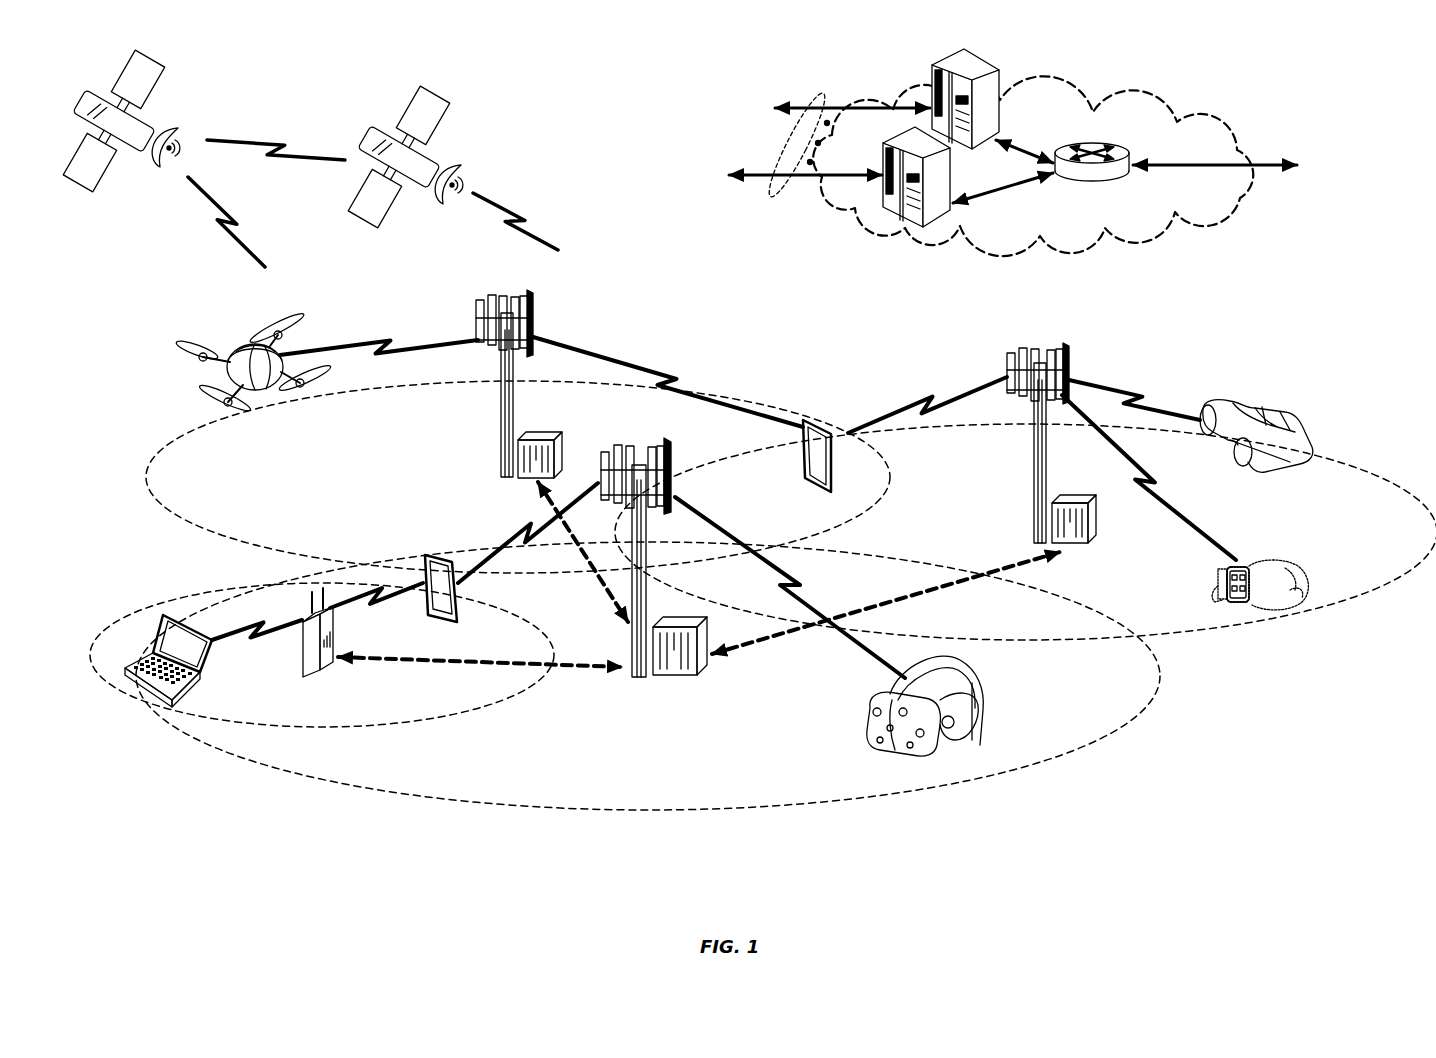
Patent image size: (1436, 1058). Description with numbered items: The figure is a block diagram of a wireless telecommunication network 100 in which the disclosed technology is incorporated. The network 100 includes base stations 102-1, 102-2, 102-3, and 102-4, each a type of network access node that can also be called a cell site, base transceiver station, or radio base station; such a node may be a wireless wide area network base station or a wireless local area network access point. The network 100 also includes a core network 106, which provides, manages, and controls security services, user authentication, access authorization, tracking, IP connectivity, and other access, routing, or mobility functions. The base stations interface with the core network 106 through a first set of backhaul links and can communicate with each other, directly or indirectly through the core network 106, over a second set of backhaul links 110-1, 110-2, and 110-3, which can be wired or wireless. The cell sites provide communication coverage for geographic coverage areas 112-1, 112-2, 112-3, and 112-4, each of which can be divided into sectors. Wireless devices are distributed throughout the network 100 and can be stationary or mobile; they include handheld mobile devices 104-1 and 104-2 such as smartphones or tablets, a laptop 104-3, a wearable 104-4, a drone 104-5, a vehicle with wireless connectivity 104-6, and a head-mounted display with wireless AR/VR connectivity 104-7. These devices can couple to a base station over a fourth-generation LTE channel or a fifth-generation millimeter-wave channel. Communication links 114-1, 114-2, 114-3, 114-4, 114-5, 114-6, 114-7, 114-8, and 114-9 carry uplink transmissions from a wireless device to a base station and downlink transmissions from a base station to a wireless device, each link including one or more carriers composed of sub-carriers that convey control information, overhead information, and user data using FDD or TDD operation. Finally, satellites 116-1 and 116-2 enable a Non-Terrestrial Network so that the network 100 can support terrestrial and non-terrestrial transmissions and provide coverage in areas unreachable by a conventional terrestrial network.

The wireless telecommunication network 100 is at (1370, 120).
The base station 102-1 is at (636, 677).
The base station 102-2 is at (501, 428).
The base station 102-3 is at (1034, 460).
The base station 102-4 is at (303, 665).
The handheld mobile device 104-1 is at (460, 602).
The handheld mobile device 104-2 is at (803, 457).
The laptop 104-3 is at (142, 704).
The wearable 104-4 is at (1250, 567).
The drone 104-5 is at (263, 390).
The vehicle with wireless connectivity 104-6 is at (1277, 410).
The head-mounted display with wireless AR/VR connectivity 104-7 is at (984, 690).
The core network 106 is at (1122, 233).
The backhaul link 110-1 is at (374, 661).
The backhaul link 110-2 is at (953, 588).
The backhaul link 110-3 is at (602, 584).
The geographic coverage area 112-1 is at (580, 812).
The geographic coverage area 112-2 is at (443, 720).
The geographic coverage area 112-3 is at (206, 530).
The geographic coverage area 112-4 is at (1346, 454).
The communication link 114-1 is at (808, 588).
The communication link 114-2 is at (522, 530).
The communication link 114-3 is at (228, 634).
The communication link 114-4 is at (374, 604).
The communication link 114-5 is at (380, 344).
The communication link 114-6 is at (670, 379).
The communication link 114-7 is at (922, 398).
The communication link 114-8 is at (1168, 500).
The communication link 114-9 is at (1131, 390).
The satellite 116-1 is at (172, 128).
The satellite 116-2 is at (454, 164).